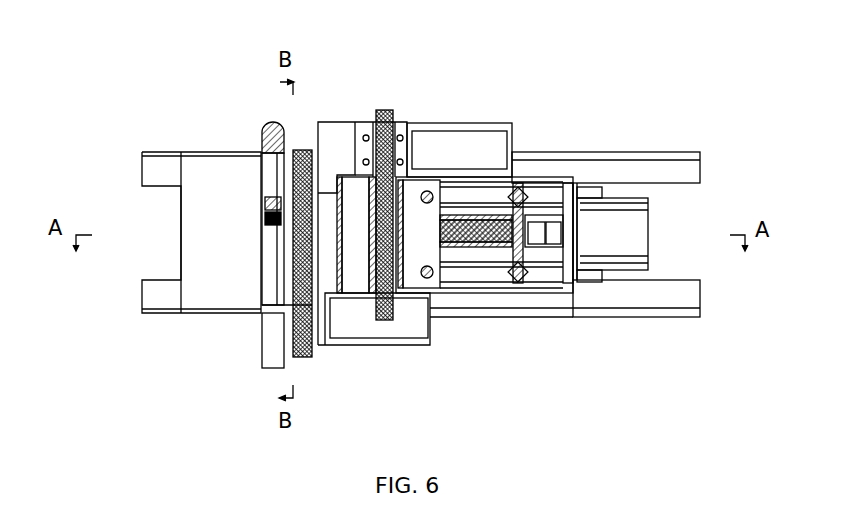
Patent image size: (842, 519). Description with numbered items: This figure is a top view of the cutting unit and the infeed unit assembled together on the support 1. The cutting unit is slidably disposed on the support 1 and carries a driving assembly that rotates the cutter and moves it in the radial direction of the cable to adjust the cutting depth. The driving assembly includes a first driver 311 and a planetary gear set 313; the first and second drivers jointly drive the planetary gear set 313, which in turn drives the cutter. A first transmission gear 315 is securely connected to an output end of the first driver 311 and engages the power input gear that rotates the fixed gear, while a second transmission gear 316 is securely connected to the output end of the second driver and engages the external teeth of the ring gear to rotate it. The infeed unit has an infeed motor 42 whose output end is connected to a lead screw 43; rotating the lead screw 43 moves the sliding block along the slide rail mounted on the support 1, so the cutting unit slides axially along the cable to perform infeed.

The support 1 is at (216, 163).
The first driver 311 is at (468, 144).
The planetary gear set 313 is at (345, 203).
The first transmission gear 315 is at (384, 112).
The second transmission gear 316 is at (312, 357).
The infeed motor 42 is at (612, 237).
The lead screw 43 is at (475, 233).